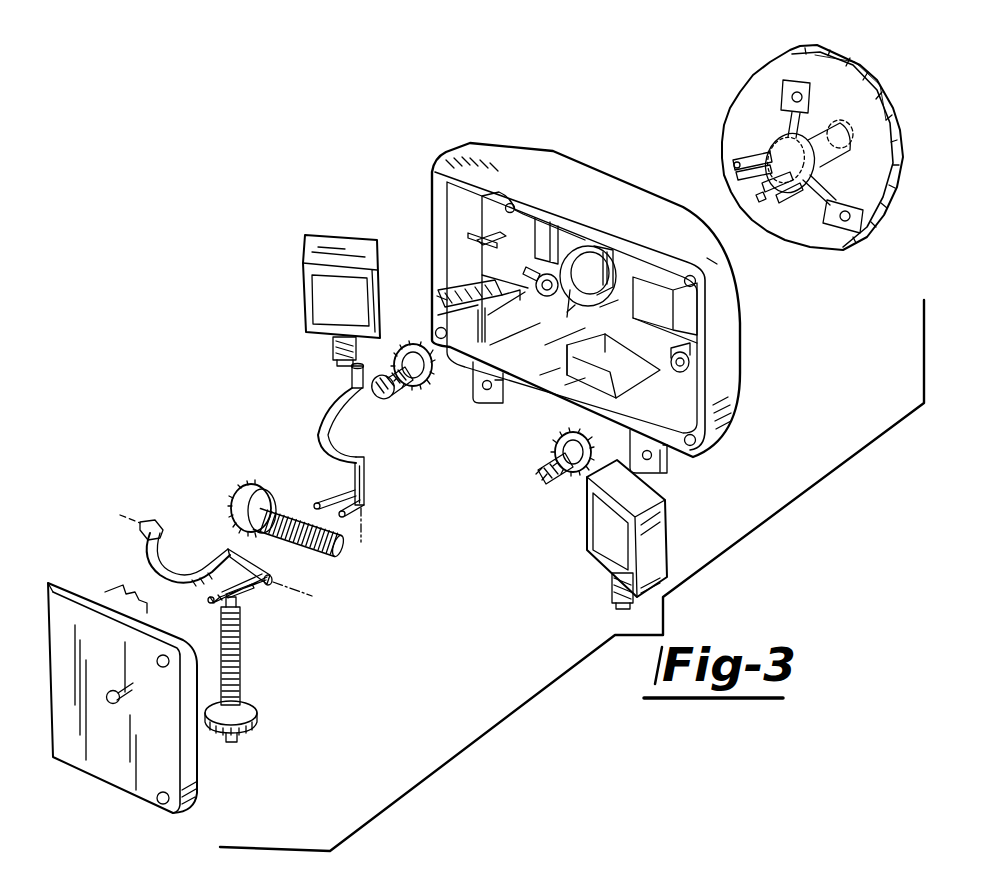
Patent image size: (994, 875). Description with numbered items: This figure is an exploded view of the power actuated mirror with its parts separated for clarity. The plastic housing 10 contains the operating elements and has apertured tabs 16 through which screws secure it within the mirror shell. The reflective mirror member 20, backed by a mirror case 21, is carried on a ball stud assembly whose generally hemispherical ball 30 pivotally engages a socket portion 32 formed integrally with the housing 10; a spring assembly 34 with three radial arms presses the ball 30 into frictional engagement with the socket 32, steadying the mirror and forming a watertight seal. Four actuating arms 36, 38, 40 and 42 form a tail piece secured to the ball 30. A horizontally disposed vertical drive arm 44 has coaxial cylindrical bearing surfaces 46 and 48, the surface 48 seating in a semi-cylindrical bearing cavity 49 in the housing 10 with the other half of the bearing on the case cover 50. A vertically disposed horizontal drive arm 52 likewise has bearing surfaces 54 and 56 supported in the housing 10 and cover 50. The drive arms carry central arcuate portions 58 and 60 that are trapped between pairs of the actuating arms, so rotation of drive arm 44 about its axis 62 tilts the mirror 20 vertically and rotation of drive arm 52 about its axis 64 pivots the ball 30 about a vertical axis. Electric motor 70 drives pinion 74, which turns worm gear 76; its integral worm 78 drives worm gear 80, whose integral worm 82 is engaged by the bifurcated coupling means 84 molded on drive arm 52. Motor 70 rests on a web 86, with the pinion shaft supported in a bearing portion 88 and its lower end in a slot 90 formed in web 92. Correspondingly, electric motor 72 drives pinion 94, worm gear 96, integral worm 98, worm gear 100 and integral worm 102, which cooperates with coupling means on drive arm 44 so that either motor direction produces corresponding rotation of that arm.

The housing 10 is at (596, 198).
The apertured tabs 16 is at (497, 402).
The reflective mirror member 20 is at (835, 48).
The mirror case 21 is at (835, 87).
The ball 30 is at (818, 174).
The socket portion 32 is at (567, 321).
The spring assembly 34 is at (772, 112).
The actuating arm 36 is at (758, 200).
The actuating arm 38 is at (742, 170).
The actuating arm 40 is at (752, 180).
The actuating arm 42 is at (776, 208).
The vertical drive arm 44 is at (172, 598).
The bearing surface 46 is at (155, 528).
The bearing surface 48 is at (248, 562).
The bearing cavity 49 is at (600, 293).
The case cover 50 is at (117, 770).
The horizontal drive arm 52 is at (300, 408).
The bearing surface 54 is at (350, 372).
The bearing surface 56 is at (366, 479).
The central arcuate portion 58 is at (152, 570).
The central arcuate portion 60 is at (316, 434).
The axis of rotation 62 is at (312, 596).
The axis of rotation 64 is at (372, 528).
The electric motor 70 is at (340, 240).
The electric motor 72 is at (672, 532).
The pinion 74 is at (332, 345).
The worm gear 76 is at (428, 385).
The worm 78 is at (388, 392).
The worm gear 80 is at (256, 488).
The worm 82 is at (336, 550).
The coupling means 84 is at (325, 486).
The web 86 is at (518, 270).
The bearing 88 is at (478, 240).
The slot 90 is at (481, 258).
The web 92 is at (440, 296).
The pinion 94 is at (606, 598).
The worm gear 96 is at (560, 437).
The worm 98 is at (548, 475).
The worm gear 100 is at (258, 715).
The worm 102 is at (240, 682).